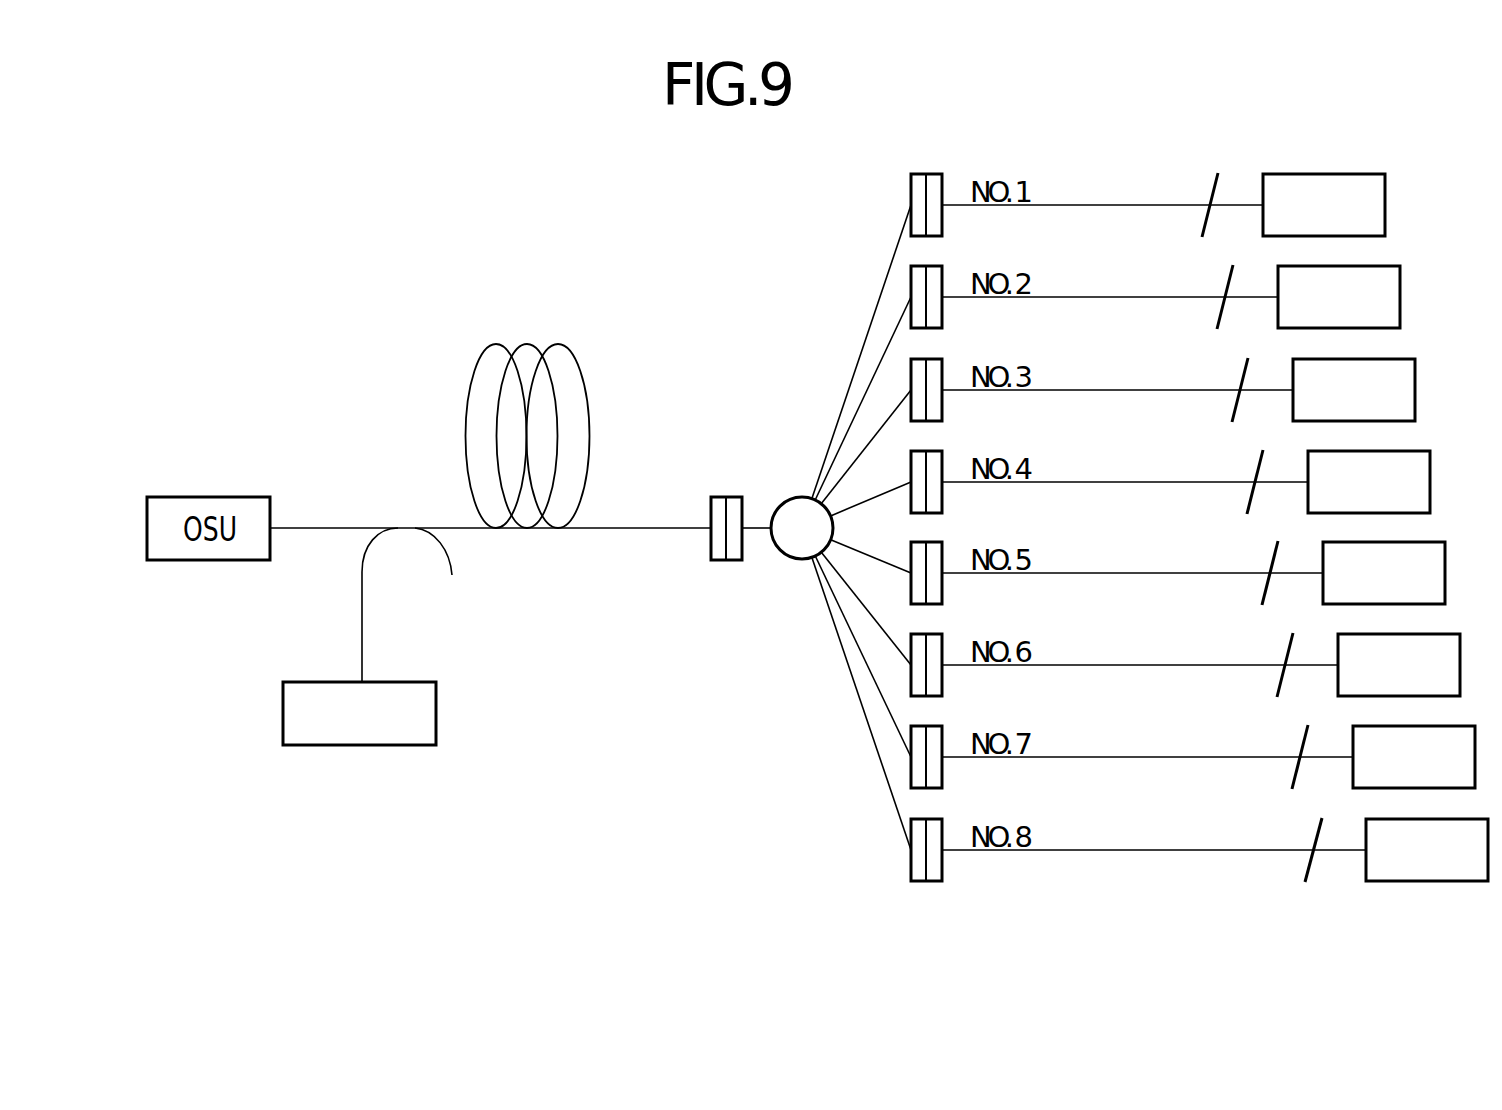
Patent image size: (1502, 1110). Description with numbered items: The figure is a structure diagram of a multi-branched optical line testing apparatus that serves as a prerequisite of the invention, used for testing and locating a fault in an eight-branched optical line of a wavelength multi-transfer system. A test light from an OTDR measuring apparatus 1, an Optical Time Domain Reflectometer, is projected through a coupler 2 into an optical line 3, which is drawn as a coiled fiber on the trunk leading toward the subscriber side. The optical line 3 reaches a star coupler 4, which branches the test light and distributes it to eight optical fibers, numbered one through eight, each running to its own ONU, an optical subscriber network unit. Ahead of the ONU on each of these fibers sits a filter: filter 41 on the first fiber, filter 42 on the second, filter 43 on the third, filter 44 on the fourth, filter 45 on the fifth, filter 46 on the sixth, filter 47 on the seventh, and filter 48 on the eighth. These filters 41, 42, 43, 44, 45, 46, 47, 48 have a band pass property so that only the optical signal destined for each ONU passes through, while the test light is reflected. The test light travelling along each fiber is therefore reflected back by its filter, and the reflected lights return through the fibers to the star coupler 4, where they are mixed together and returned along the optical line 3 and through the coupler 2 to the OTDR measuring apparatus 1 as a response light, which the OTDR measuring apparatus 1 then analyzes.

The OTDR measuring apparatus 1 is at (436, 712).
The coupler 2 is at (392, 535).
The optical line 3 is at (488, 350).
The star coupler 4 is at (780, 552).
The filter 41 is at (1205, 223).
The filter 42 is at (1220, 315).
The filter 43 is at (1235, 408).
The filter 44 is at (1250, 500).
The filter 45 is at (1265, 591).
The filter 46 is at (1280, 683).
The filter 47 is at (1295, 775).
The filter 48 is at (1309, 868).